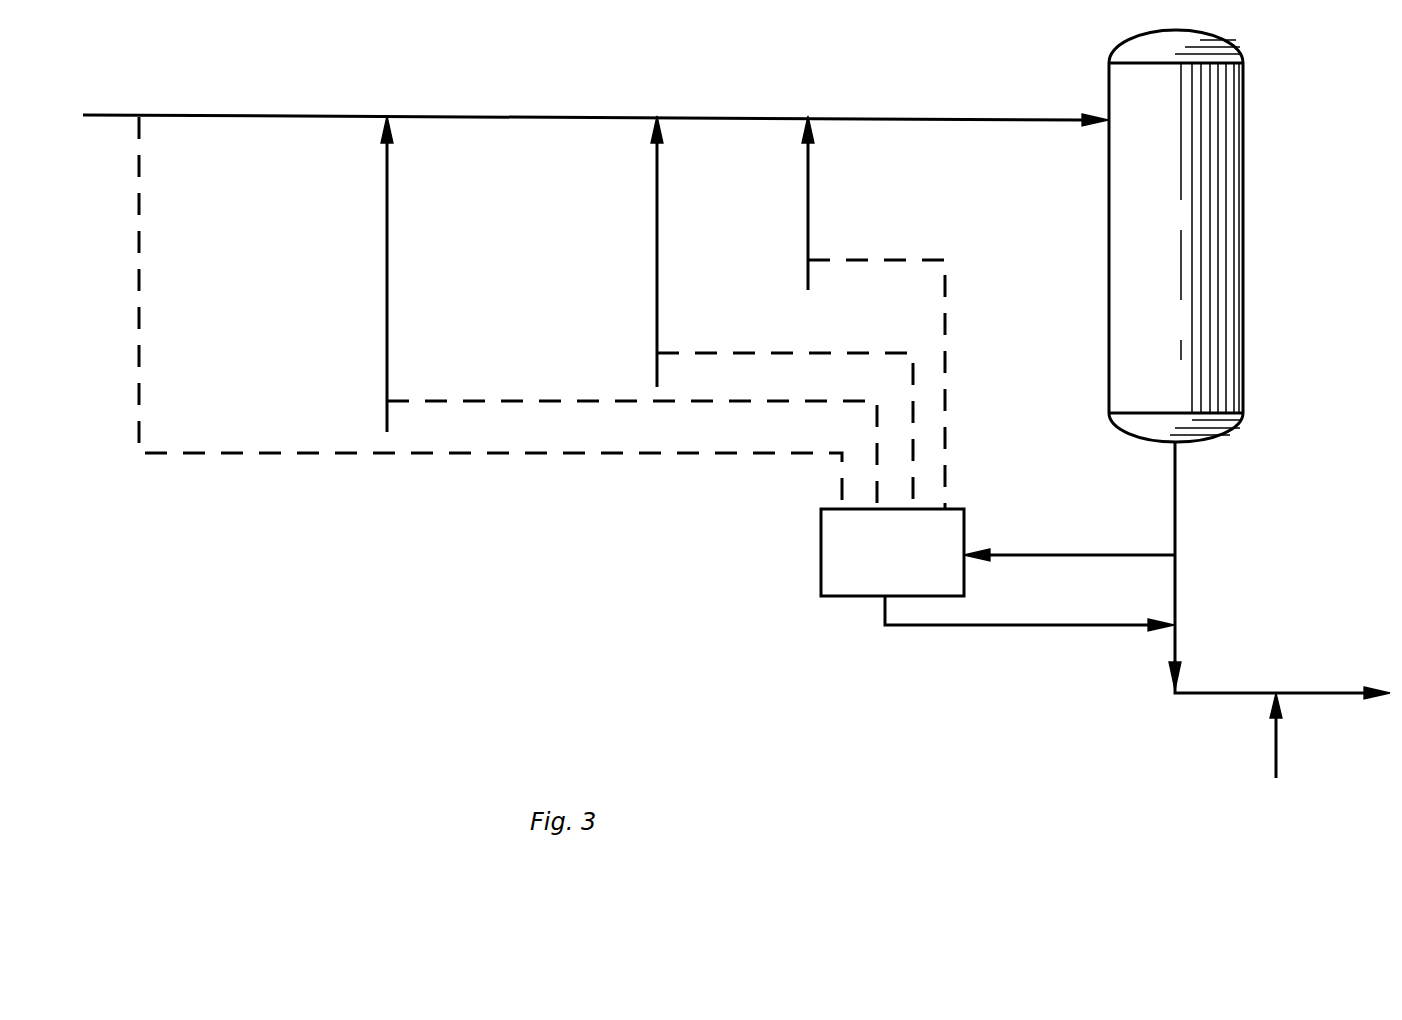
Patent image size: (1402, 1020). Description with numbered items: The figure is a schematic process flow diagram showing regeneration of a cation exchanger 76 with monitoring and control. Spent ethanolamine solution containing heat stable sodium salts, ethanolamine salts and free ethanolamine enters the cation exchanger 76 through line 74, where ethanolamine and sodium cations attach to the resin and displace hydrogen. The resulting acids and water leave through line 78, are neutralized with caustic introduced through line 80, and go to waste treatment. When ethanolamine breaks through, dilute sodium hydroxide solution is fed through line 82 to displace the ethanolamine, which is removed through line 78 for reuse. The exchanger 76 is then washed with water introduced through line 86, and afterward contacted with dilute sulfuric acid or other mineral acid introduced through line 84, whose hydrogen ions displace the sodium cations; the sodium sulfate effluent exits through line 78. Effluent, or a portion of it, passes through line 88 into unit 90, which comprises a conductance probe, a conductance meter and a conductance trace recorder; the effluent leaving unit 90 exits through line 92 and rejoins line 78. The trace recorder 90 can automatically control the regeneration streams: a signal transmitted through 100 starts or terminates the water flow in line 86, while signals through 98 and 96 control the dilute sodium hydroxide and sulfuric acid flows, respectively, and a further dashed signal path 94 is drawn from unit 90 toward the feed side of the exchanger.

The line 74 is at (233, 116).
The cation exchanger 76 is at (1190, 400).
The line 78 is at (1177, 490).
The line 80 is at (1277, 745).
The line 82 is at (387, 312).
The line 84 is at (810, 205).
The line 86 is at (658, 212).
The line 88 is at (1058, 556).
The conductance monitoring unit 90 is at (906, 565).
The line 92 is at (1030, 627).
The control signal path 94 is at (318, 452).
The control signal path 96 is at (947, 392).
The control signal path 98 is at (875, 450).
The control signal path 100 is at (830, 350).